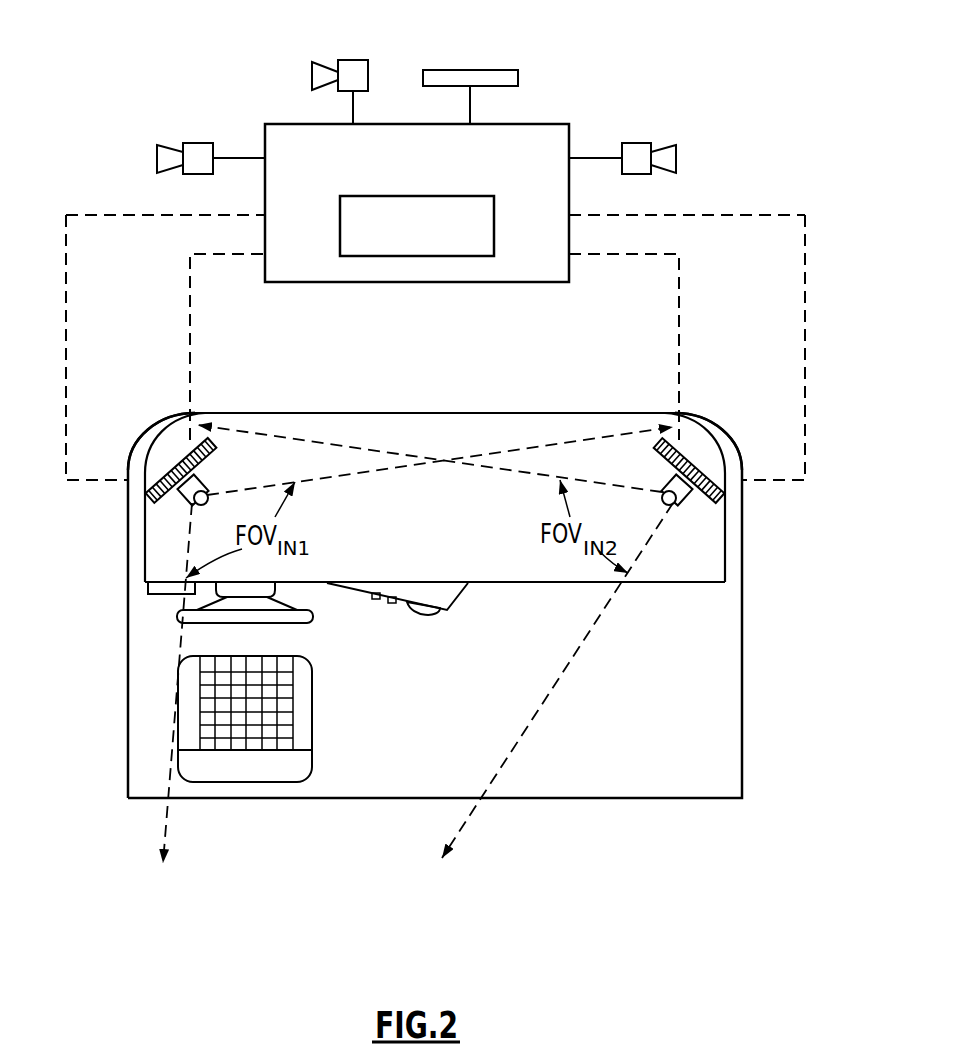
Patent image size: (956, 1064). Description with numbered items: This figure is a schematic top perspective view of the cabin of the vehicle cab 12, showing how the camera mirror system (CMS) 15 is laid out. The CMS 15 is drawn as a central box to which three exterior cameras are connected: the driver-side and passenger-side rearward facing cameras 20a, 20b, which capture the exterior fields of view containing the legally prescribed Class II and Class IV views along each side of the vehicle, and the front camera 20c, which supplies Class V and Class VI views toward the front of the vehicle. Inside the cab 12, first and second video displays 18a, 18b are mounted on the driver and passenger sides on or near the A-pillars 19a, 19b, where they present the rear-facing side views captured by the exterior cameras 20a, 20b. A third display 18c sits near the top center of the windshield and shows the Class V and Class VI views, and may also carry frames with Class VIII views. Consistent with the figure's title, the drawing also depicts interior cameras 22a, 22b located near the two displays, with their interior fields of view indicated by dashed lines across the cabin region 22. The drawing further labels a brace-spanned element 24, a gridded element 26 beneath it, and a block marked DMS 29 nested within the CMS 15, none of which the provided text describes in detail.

The vehicle cab 12 is at (548, 392).
The camera mirror system 15 is at (570, 137).
The first video display 18a is at (177, 455).
The second video display 18b is at (697, 452).
The third display 18c is at (503, 70).
The A-pillar 19a is at (147, 452).
The A-pillar 19b is at (722, 452).
The rearward facing camera 20a is at (192, 143).
The rearward facing camera 20b is at (640, 143).
The camera 20c is at (350, 60).
The vehicle cabin 22 is at (660, 742).
The first interior camera 22a is at (207, 480).
The second interior camera 22b is at (665, 477).
The driver seat 24 is at (381, 609).
The seat sensor array 26 is at (300, 705).
The driver monitoring system 29 is at (388, 257).